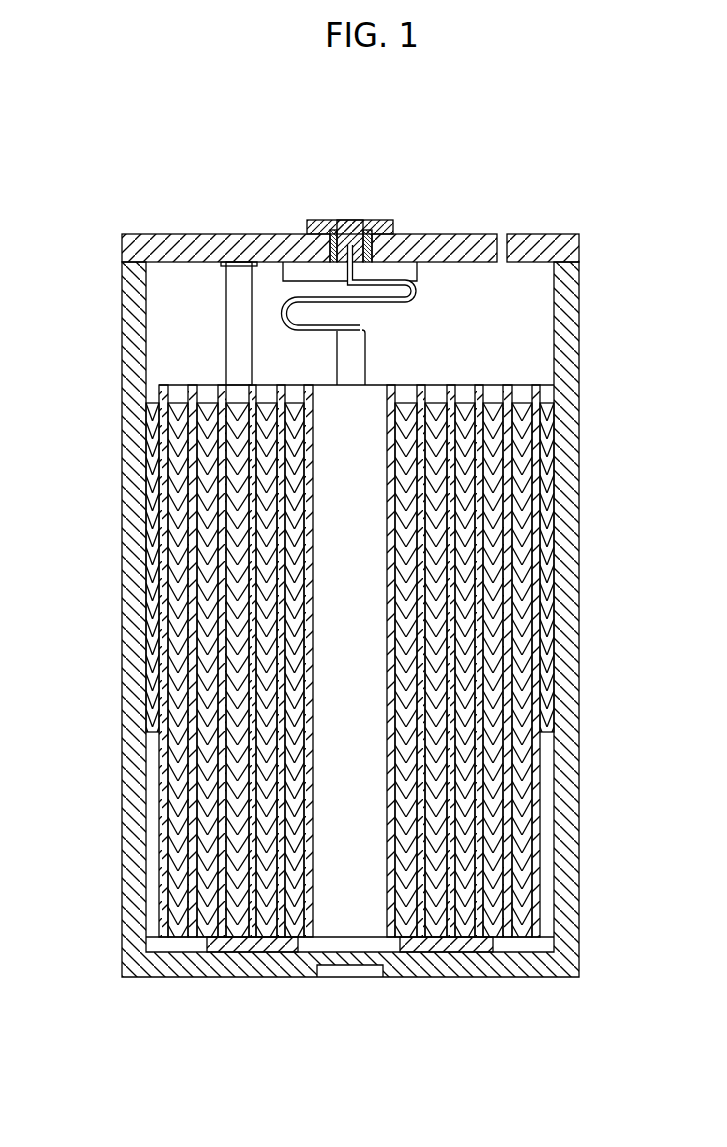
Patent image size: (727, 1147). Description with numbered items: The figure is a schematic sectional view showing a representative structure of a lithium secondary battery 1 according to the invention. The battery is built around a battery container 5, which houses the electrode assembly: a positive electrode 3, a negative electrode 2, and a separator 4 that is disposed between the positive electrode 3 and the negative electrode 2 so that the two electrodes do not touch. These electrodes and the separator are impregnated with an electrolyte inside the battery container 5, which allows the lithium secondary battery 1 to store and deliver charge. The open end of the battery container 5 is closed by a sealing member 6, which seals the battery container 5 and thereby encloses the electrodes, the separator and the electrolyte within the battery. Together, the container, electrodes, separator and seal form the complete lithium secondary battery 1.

The lithium secondary battery 1 is at (328, 531).
The negative electrode 2 is at (522, 820).
The positive electrode 3 is at (207, 815).
The separator 4 is at (190, 888).
The battery container 5 is at (133, 337).
The sealing member 6 is at (309, 220).